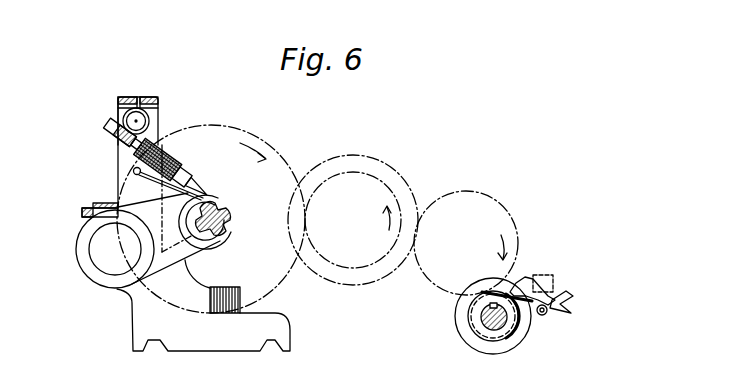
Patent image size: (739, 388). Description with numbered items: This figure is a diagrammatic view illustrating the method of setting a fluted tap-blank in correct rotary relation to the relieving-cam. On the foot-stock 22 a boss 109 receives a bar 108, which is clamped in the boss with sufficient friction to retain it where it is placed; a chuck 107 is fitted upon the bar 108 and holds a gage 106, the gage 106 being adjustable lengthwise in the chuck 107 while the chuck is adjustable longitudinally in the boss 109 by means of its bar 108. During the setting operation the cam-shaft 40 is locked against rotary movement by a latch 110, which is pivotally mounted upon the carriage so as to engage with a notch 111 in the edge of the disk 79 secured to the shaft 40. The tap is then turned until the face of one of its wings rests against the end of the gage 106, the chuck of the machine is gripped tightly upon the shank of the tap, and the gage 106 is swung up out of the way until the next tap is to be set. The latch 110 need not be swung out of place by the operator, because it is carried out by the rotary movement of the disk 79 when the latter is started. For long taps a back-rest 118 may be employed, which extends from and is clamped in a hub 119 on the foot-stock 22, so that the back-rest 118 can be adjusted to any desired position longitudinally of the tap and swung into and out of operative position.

The foot-stock 22 is at (140, 327).
The connecting-shaft 40 is at (502, 322).
The disk 79 is at (463, 333).
The gage 106 is at (187, 193).
The chuck 107 is at (120, 145).
The bar 108 is at (134, 120).
The boss 109 is at (150, 100).
The latch 110 is at (547, 283).
The notch 111 is at (513, 287).
The back-rest 118 is at (221, 245).
The hub 119 is at (97, 207).